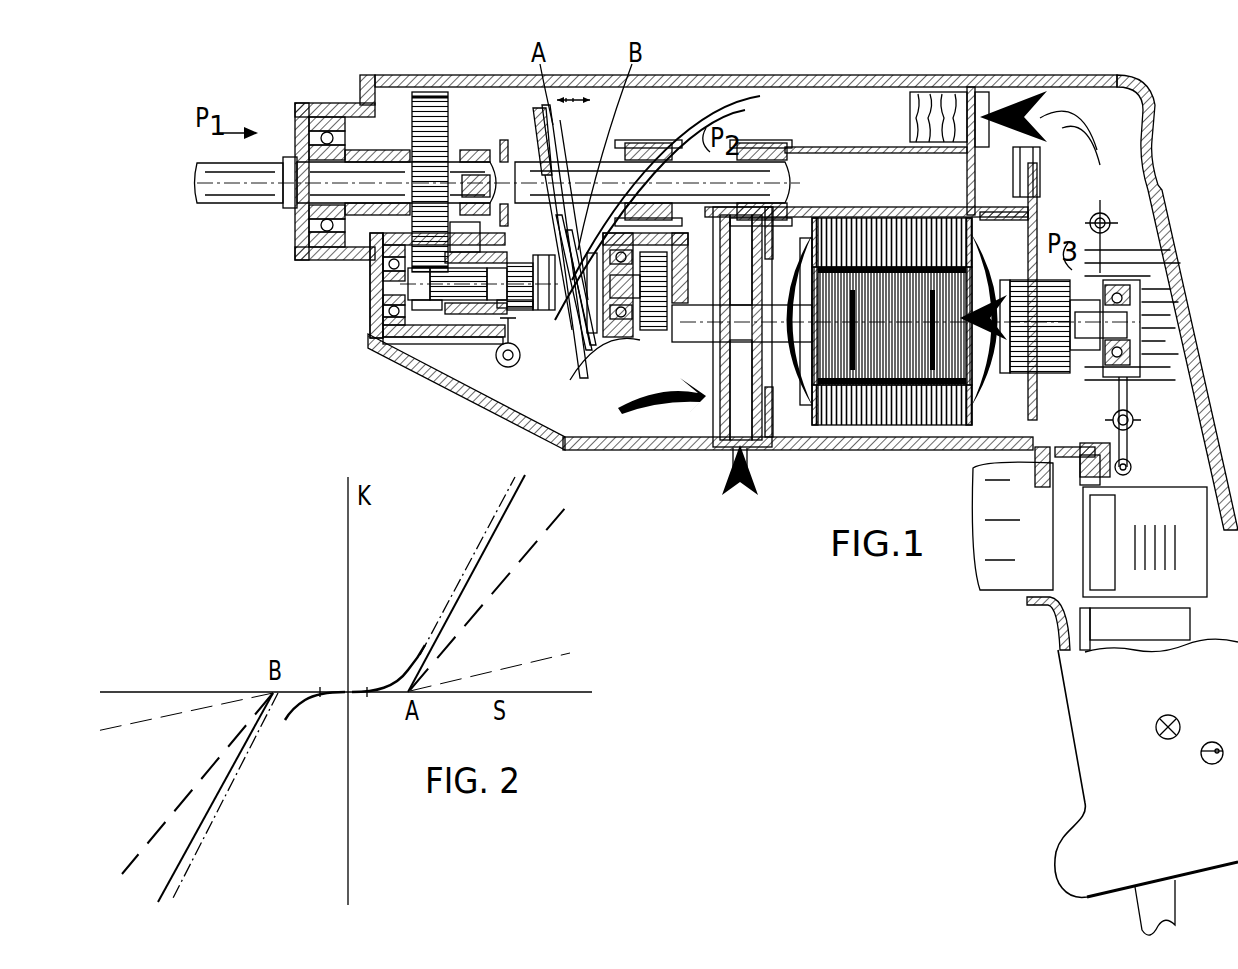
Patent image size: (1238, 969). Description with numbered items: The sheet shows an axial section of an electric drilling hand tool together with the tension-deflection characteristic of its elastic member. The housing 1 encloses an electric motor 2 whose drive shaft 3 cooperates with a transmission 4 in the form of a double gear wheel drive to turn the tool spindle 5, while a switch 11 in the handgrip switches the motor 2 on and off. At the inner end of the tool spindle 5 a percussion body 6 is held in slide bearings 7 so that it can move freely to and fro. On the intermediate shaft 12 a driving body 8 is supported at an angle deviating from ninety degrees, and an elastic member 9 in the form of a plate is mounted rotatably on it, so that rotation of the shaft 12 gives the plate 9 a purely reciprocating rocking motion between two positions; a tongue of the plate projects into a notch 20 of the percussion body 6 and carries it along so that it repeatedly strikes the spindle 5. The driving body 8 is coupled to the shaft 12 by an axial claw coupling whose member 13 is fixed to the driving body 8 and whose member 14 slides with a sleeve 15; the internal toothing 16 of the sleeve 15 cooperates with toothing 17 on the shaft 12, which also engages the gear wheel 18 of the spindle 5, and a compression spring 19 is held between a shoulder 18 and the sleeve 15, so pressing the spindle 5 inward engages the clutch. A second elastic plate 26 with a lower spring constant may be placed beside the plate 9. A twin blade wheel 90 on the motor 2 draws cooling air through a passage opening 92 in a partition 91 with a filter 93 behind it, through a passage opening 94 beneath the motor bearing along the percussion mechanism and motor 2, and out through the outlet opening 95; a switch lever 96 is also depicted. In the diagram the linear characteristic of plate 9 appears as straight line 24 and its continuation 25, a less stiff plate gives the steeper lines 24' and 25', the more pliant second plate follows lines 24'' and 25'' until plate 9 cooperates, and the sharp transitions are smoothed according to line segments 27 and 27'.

In FIG. 1, the housing 1 is at (1135, 75).
In FIG. 1, the electric motor 2 is at (884, 428).
In FIG. 1, the drive shaft 3 is at (667, 335).
In FIG. 1, the transmission 4 is at (620, 370).
In FIG. 1, the tool spindle 5 is at (365, 185).
In FIG. 1, the percussion body 6 is at (700, 185).
In FIG. 1, the slide bearings 7 is at (648, 150).
In FIG. 1, the driving body 8 is at (508, 368).
In FIG. 1, the elastic member 9 is at (555, 180).
In FIG. 1, the switch 11 is at (1000, 545).
In FIG. 1, the intermediate shaft 12 is at (490, 318).
In FIG. 1, the claw coupling member 13 is at (505, 340).
In FIG. 1, the claw coupling member 14 is at (470, 312).
In FIG. 1, the sleeve 15 is at (425, 335).
In FIG. 1, the internal toothing 16 is at (395, 348).
In FIG. 1, the toothing 17 is at (383, 333).
In FIG. 1, the gear wheel 18 is at (430, 95).
In FIG. 1, the compression spring 19 is at (470, 262).
In FIG. 1, the notch 20 is at (585, 220).
In FIG. 1, the second elastic plate 26 is at (545, 108).
In FIG. 1, the twin blade wheel 90 is at (772, 430).
In FIG. 1, the partition 91 is at (1000, 145).
In FIG. 1, the passage opening 92 is at (985, 115).
In FIG. 1, the filter 93 is at (935, 92).
In FIG. 1, the passage opening 94 is at (700, 418).
In FIG. 1, the outlet opening 95 is at (764, 470).
In FIG. 1, the switch lever 96 is at (1138, 250).
In FIG. 2, the straight line 24 is at (477, 583).
In FIG. 2, the line 24' is at (491, 595).
In FIG. 2, the line 24'' is at (495, 655).
In FIG. 2, the straight line 25 is at (208, 797).
In FIG. 2, the line 25' is at (197, 783).
In FIG. 2, the line 25'' is at (181, 721).
In FIG. 2, the line segment 27 is at (388, 651).
In FIG. 2, the line segment 27' is at (311, 730).